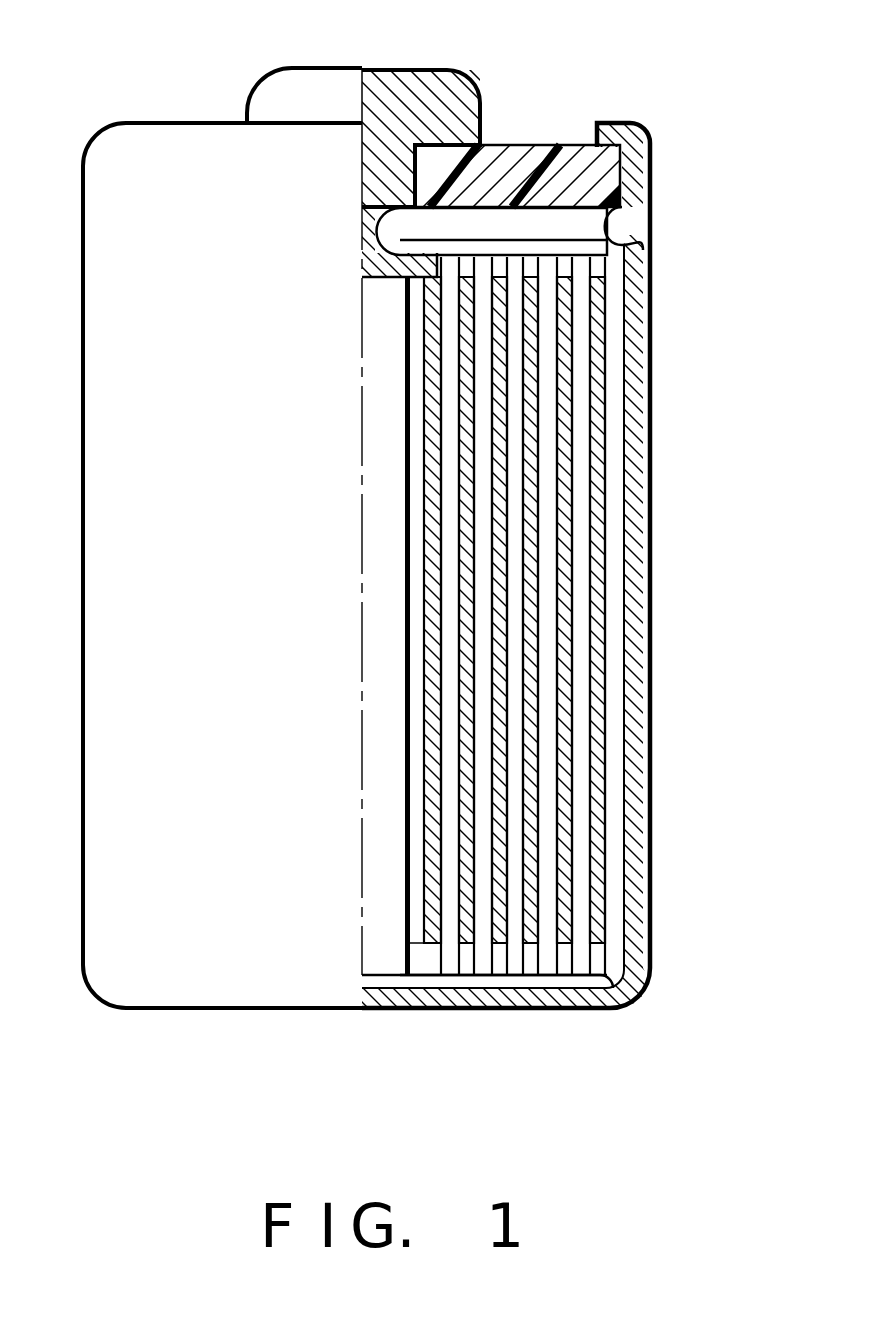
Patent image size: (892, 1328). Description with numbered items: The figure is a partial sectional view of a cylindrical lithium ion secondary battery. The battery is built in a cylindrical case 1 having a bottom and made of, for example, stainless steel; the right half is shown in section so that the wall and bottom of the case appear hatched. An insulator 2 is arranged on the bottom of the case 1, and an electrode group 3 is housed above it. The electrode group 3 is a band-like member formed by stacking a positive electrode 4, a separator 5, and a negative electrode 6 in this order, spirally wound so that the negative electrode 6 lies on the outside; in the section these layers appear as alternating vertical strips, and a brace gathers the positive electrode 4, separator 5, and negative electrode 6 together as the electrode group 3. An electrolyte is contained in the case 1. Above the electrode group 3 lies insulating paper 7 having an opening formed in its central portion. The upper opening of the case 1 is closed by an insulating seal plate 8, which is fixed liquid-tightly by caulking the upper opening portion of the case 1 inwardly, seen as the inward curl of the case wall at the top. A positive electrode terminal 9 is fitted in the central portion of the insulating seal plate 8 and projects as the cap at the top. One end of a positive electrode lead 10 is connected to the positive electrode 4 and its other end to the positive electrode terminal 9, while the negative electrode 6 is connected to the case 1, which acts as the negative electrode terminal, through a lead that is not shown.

The cylindrical case 1 is at (645, 825).
The insulator 2 is at (525, 980).
The electrode group 3 is at (446, 540).
The positive electrode 4 is at (570, 379).
The separator 5 is at (578, 413).
The negative electrode 6 is at (595, 455).
The insulating paper 7 is at (633, 240).
The insulating seal plate 8 is at (538, 157).
The positive electrode terminal 9 is at (405, 77).
The positive electrode lead 10 is at (385, 252).